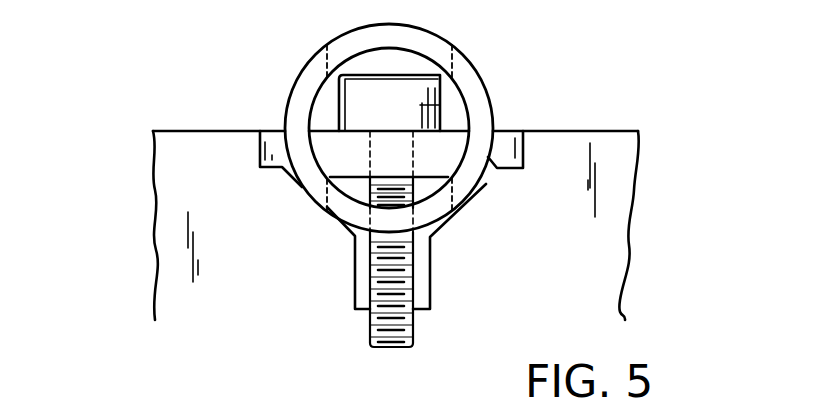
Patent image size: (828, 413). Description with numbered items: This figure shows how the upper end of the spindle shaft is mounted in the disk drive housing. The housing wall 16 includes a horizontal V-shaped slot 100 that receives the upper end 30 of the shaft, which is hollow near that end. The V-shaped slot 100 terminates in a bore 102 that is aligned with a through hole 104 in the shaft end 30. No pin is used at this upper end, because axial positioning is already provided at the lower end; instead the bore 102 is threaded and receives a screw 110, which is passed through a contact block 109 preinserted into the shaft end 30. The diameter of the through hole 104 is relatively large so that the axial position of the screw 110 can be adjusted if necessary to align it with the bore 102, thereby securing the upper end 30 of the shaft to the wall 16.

The housing wall 16 is at (168, 227).
The upper end of shaft 30 is at (298, 98).
The V-shaped slot 100 is at (303, 191).
The bore 102 is at (355, 247).
The through hole 104 is at (327, 67).
The contact block 109 is at (453, 152).
The screw 110 is at (423, 105).